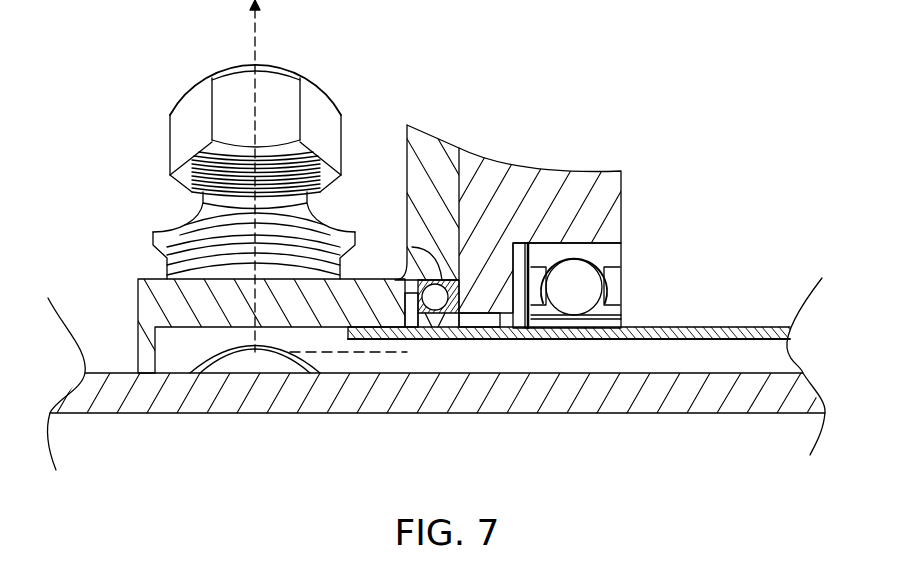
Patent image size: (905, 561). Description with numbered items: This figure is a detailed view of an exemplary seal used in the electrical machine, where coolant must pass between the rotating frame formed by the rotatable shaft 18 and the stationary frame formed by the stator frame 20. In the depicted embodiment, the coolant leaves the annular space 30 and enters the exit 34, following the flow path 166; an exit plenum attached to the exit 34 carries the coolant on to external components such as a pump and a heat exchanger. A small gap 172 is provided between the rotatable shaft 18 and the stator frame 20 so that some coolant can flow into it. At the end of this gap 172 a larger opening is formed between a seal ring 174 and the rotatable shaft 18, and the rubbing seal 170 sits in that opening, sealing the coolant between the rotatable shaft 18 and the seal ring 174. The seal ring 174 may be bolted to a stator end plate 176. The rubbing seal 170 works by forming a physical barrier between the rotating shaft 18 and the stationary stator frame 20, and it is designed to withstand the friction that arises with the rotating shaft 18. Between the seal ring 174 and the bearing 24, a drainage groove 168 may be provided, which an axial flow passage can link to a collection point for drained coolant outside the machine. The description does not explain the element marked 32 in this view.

The exit 34 is at (224, 82).
The flow path 166 is at (258, 30).
The stator frame 20 is at (421, 143).
The stator end plate 176 is at (471, 170).
The lip 32 is at (408, 241).
The bearing 24 is at (599, 243).
The rotatable shaft 18 is at (691, 325).
The rubbing seal 170 is at (432, 309).
The drainage groove 168 is at (485, 327).
The annular space 30 is at (603, 366).
The gap 172 is at (346, 329).
The seal ring 174 is at (457, 312).